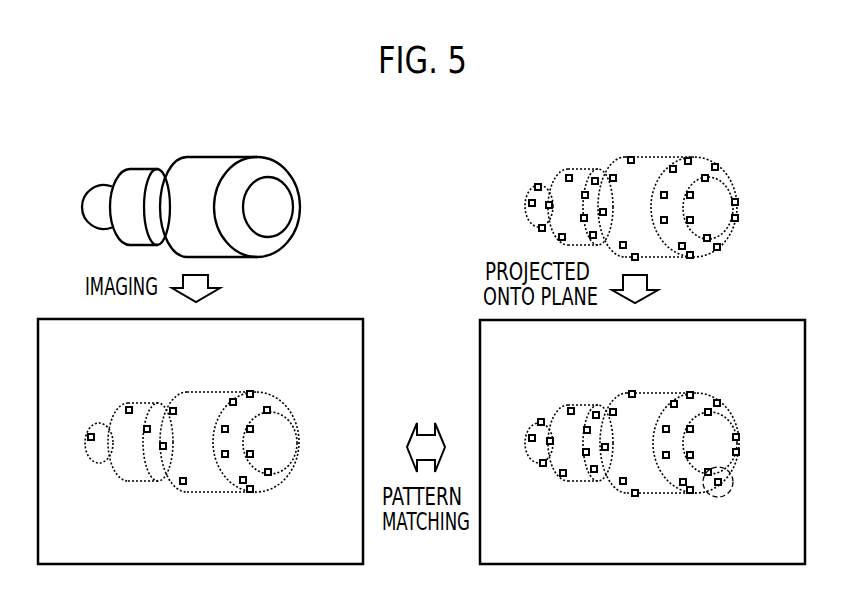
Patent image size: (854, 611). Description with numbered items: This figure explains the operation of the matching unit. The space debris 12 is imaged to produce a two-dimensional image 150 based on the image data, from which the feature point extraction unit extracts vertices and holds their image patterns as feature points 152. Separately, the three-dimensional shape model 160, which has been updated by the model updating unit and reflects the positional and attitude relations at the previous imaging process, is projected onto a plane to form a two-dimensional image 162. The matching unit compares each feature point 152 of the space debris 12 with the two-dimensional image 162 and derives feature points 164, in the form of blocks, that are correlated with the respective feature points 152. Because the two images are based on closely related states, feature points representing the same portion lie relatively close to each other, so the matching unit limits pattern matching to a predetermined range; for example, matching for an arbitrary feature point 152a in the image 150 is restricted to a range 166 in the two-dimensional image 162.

The space debris 12 is at (212, 156).
The three-dimensional shape model 160 is at (680, 145).
The two-dimensional image 150 is at (347, 310).
The feature points 152 is at (233, 401).
The arbitrary feature point 152a is at (253, 489).
The two-dimensional image 162 is at (787, 311).
The feature points 164 is at (674, 402).
The range 166 is at (733, 478).